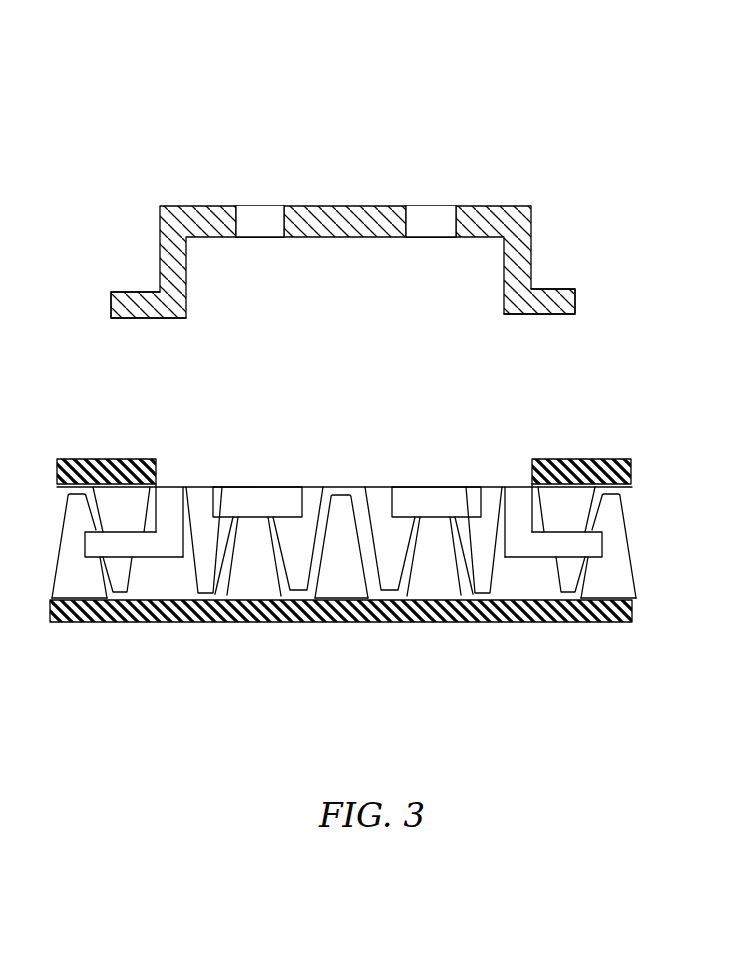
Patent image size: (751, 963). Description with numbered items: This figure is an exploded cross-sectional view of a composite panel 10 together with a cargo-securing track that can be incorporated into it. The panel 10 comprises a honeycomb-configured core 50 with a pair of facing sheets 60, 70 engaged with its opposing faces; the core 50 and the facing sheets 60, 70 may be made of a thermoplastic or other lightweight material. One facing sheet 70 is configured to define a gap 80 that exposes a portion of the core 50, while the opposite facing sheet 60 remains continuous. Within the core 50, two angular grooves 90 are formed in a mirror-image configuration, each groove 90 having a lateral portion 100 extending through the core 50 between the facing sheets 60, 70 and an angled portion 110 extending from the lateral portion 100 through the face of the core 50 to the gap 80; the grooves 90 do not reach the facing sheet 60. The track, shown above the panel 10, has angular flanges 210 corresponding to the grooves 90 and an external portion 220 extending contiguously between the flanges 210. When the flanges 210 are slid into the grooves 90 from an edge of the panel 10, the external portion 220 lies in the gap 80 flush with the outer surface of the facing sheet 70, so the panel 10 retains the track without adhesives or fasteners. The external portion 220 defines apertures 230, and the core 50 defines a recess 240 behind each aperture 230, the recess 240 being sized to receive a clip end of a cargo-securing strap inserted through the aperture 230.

The composite panel 10 is at (604, 372).
The honeycomb-configured core 50 is at (525, 588).
The facing sheet 60 is at (570, 623).
The facing sheet 70 is at (99, 460).
The gap 80 is at (438, 482).
The angular groove 90 is at (192, 566).
The lateral portion 100 is at (123, 545).
The angled portion 110 is at (171, 510).
The flanges 210 is at (157, 292).
The external portion 220 is at (493, 222).
The apertures 230 is at (436, 222).
The recess 240 is at (412, 508).